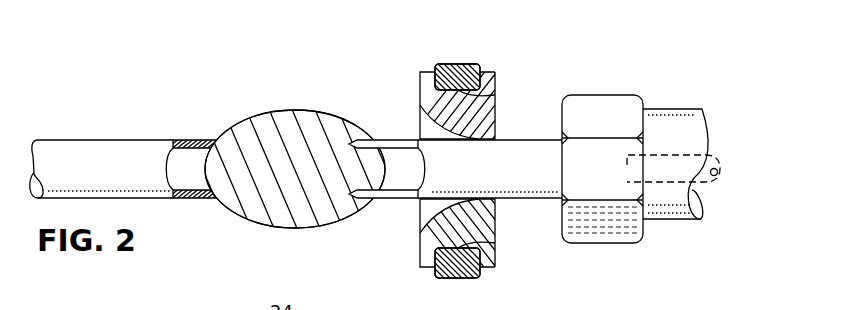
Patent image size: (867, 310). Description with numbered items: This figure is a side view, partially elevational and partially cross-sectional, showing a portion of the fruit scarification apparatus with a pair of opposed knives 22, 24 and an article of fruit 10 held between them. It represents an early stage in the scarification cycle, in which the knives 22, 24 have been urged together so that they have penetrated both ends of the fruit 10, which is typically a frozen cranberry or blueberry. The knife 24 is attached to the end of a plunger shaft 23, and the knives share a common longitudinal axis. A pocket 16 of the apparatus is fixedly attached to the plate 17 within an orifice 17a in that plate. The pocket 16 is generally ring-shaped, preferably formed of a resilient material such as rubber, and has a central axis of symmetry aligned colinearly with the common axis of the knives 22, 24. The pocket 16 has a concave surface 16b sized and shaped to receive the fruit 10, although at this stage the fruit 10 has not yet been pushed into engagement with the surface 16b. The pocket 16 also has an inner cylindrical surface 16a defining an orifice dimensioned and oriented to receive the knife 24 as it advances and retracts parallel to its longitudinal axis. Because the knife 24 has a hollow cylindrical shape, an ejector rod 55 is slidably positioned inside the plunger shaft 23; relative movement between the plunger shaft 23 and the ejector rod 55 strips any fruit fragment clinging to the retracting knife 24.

The article of fruit 10 is at (273, 115).
The pocket 16 is at (420, 88).
The inner cylindrical surface 16a is at (497, 138).
The concave surface 16b is at (420, 120).
The plate 17 is at (450, 64).
The orifice 17a is at (492, 92).
The knife 22 is at (80, 140).
The plunger shaft 23 is at (660, 108).
The knife 24 is at (533, 200).
The ejector rod 55 is at (627, 175).